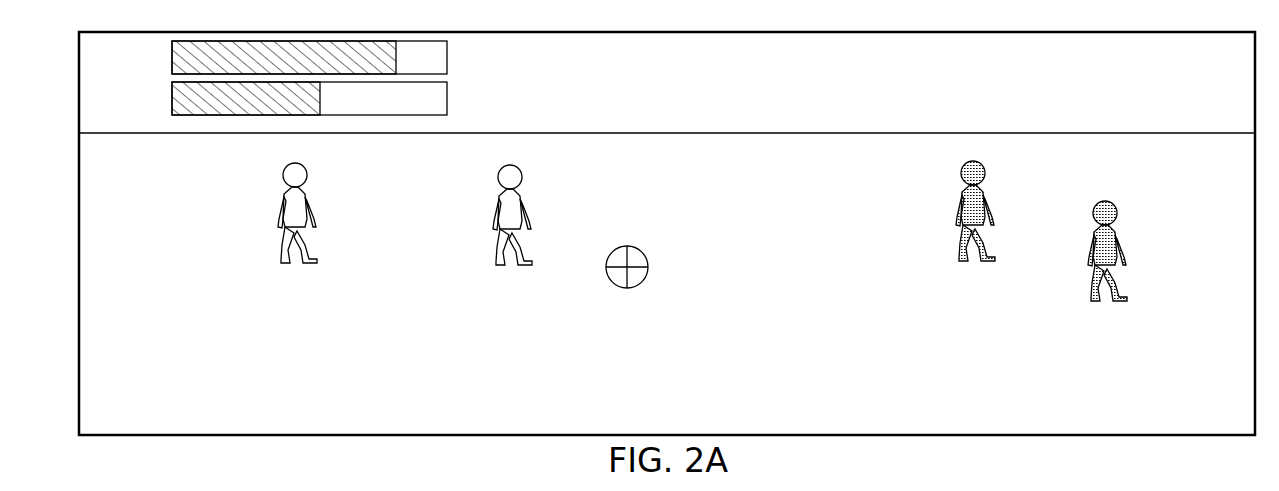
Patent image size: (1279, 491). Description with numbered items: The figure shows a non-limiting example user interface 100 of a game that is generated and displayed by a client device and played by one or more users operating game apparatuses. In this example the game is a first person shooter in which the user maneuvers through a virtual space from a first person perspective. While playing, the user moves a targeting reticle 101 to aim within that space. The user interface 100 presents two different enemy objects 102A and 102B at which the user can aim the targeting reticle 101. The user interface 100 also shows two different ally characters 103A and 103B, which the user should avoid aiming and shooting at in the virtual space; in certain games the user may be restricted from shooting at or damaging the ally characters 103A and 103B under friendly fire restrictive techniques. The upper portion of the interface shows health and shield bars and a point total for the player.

The user interface 100 is at (56, 51).
The targeting reticle 101 is at (644, 249).
The enemy object 102A is at (284, 170).
The enemy object 102B is at (498, 174).
The ally character 103A is at (961, 167).
The ally character 103B is at (1095, 204).